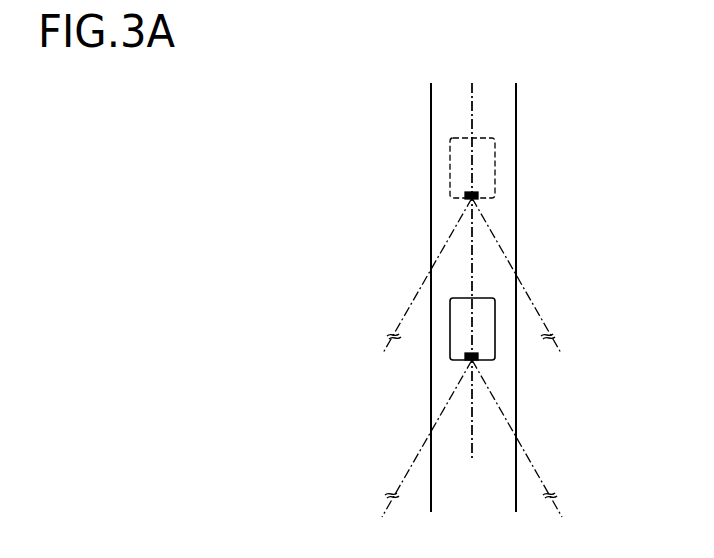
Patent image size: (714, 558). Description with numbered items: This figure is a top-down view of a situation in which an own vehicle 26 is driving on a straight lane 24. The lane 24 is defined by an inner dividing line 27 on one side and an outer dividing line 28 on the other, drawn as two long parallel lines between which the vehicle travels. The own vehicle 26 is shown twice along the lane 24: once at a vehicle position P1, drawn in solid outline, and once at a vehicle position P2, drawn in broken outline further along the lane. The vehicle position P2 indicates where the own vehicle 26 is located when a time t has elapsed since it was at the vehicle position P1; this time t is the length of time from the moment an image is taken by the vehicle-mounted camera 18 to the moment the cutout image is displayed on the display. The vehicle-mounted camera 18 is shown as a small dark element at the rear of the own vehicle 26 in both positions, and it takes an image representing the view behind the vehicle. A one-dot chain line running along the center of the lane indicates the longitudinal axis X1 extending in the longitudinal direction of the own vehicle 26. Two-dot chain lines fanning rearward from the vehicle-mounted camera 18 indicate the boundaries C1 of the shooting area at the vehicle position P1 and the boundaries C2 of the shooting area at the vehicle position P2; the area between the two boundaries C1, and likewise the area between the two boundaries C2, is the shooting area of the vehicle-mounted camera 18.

The vehicle-mounted camera 18 is at (462, 195).
The lane 24 is at (512, 237).
The own vehicle 26 is at (458, 158).
The inner dividing line 27 is at (516, 423).
The outer dividing line 28 is at (428, 423).
The longitudinal axis X1 is at (472, 112).
The boundaries of shooting area C1 is at (400, 480).
The boundaries of shooting area C2 is at (402, 320).
The vehicle position P1 is at (497, 350).
The vehicle position P2 is at (499, 170).